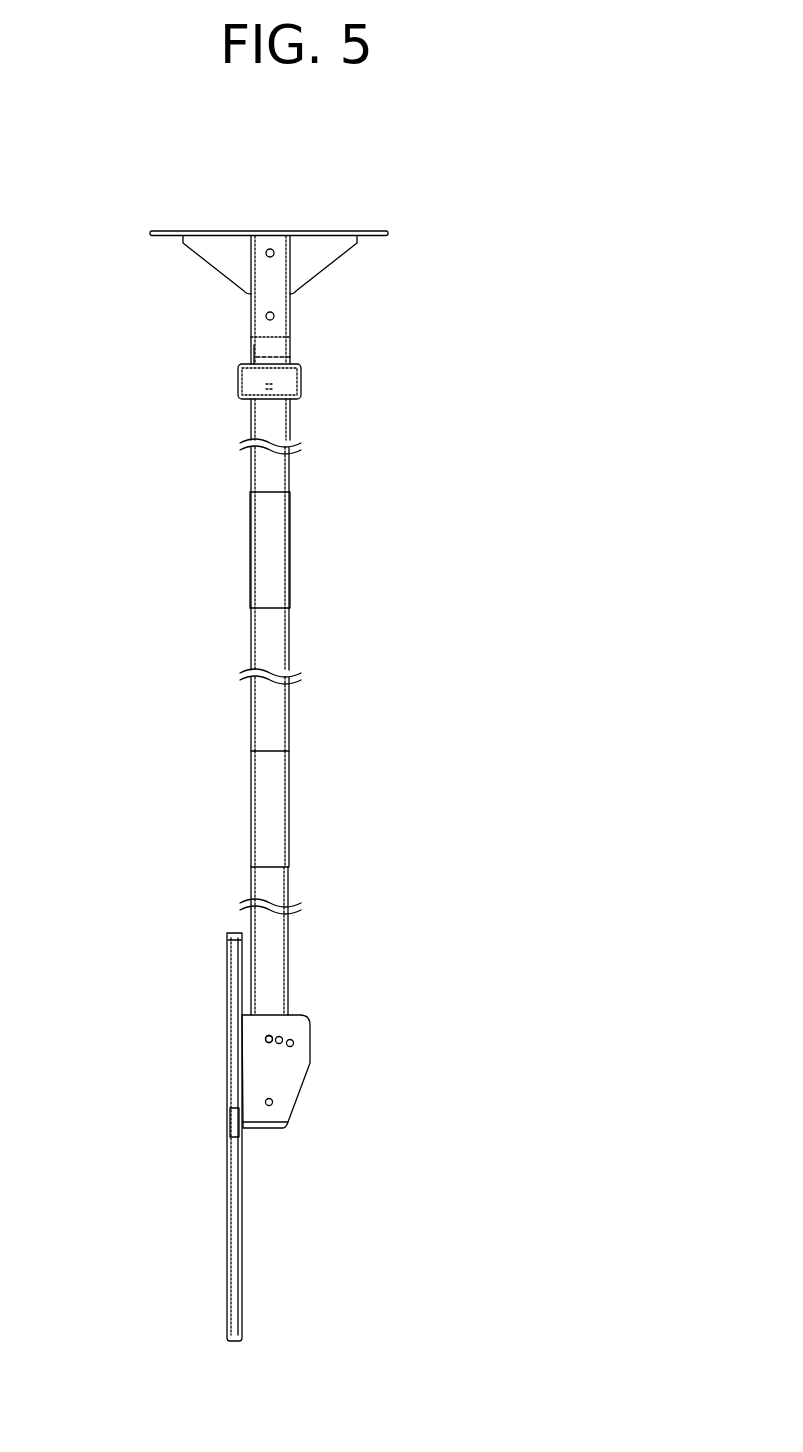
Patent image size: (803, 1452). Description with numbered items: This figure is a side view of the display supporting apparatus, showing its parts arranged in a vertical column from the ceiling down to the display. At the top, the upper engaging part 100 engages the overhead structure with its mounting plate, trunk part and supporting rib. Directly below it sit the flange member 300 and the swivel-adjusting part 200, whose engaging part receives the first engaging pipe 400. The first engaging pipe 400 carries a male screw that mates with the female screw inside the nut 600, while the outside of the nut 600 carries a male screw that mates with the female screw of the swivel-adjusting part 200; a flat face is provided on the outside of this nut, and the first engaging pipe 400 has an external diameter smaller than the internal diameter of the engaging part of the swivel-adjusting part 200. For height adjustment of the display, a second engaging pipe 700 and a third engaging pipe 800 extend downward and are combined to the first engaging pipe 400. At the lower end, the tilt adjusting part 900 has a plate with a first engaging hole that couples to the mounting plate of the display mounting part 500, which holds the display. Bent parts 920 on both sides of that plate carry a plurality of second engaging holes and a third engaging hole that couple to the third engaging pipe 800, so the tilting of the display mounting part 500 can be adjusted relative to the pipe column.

The upper engaging part 100 is at (192, 263).
The swivel-adjusting part 200 is at (238, 387).
The flange member 300 is at (255, 352).
The first engaging pipe 400 is at (243, 478).
The display mounting part 500 is at (226, 984).
The nut 600 is at (241, 397).
The second engaging pipe 700 is at (243, 637).
The third engaging pipe 800 is at (243, 803).
The tilt adjusting part 900 is at (304, 1094).
The bent parts 920 is at (257, 1034).